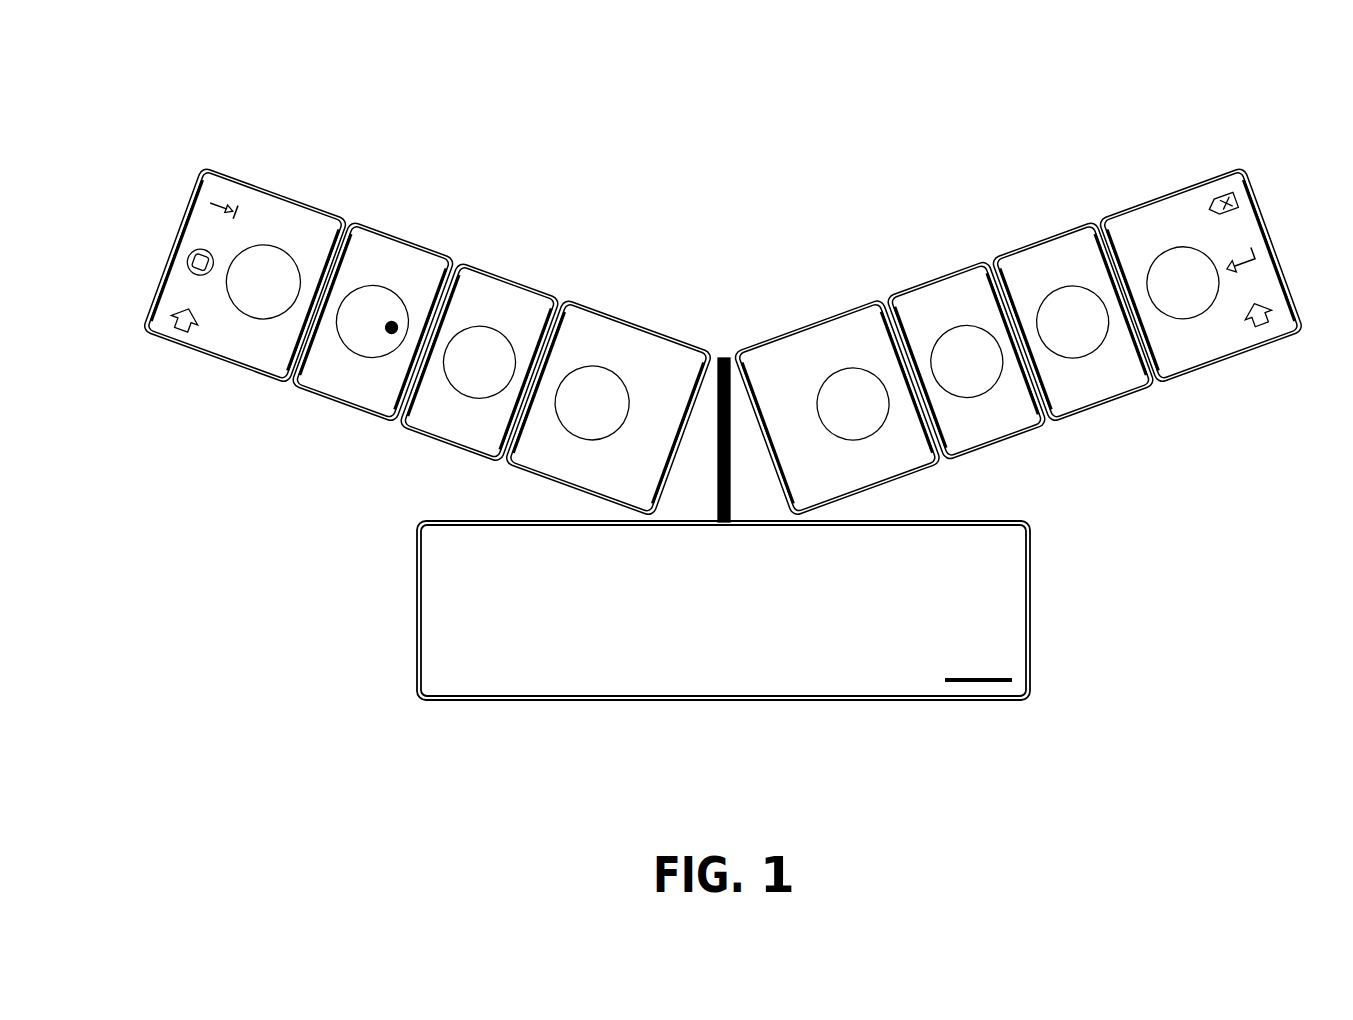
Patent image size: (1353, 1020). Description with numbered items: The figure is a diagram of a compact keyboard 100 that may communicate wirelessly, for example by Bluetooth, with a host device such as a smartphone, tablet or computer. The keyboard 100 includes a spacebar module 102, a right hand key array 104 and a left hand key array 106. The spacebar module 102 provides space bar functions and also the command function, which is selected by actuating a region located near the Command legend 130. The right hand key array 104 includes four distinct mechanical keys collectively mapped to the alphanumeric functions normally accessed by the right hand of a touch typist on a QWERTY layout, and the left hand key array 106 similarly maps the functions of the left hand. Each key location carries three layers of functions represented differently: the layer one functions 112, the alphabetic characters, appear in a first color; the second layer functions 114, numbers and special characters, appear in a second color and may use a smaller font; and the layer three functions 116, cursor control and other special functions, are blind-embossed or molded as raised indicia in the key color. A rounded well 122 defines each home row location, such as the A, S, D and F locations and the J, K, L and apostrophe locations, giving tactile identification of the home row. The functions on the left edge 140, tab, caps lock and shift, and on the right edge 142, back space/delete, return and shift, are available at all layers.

The keyboard 100 is at (665, 190).
The spacebar module 102 is at (803, 632).
The right hand key array 104 is at (918, 267).
The left hand key array 106 is at (482, 253).
The layer one functions 112 is at (773, 337).
The second layer functions 114 is at (1073, 227).
The layer three functions 116 is at (995, 392).
The rounded well 122 is at (262, 232).
The Command legend 130 is at (460, 702).
The left edge 140 is at (167, 367).
The right edge 142 is at (1208, 157).